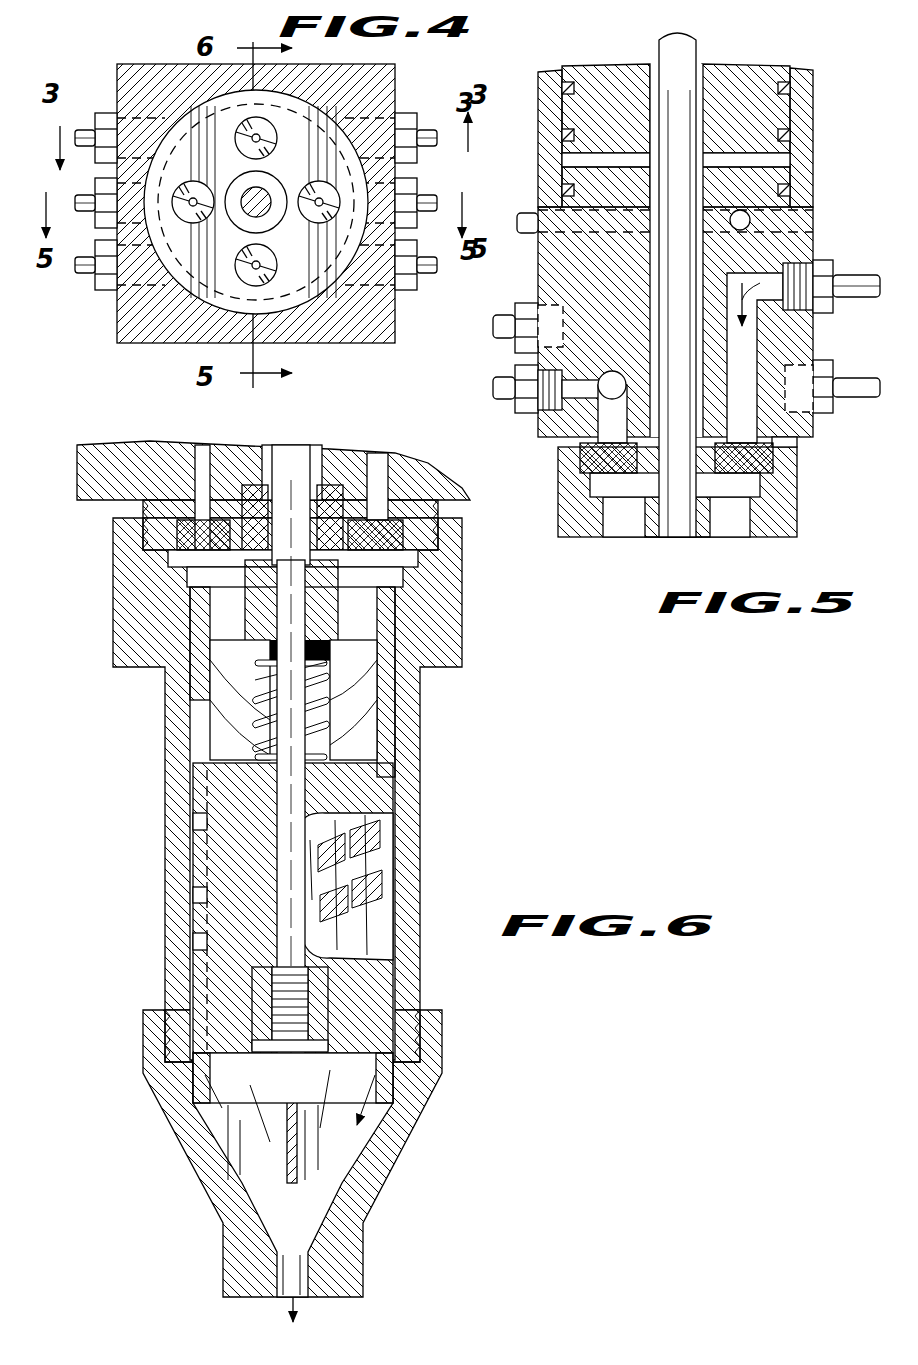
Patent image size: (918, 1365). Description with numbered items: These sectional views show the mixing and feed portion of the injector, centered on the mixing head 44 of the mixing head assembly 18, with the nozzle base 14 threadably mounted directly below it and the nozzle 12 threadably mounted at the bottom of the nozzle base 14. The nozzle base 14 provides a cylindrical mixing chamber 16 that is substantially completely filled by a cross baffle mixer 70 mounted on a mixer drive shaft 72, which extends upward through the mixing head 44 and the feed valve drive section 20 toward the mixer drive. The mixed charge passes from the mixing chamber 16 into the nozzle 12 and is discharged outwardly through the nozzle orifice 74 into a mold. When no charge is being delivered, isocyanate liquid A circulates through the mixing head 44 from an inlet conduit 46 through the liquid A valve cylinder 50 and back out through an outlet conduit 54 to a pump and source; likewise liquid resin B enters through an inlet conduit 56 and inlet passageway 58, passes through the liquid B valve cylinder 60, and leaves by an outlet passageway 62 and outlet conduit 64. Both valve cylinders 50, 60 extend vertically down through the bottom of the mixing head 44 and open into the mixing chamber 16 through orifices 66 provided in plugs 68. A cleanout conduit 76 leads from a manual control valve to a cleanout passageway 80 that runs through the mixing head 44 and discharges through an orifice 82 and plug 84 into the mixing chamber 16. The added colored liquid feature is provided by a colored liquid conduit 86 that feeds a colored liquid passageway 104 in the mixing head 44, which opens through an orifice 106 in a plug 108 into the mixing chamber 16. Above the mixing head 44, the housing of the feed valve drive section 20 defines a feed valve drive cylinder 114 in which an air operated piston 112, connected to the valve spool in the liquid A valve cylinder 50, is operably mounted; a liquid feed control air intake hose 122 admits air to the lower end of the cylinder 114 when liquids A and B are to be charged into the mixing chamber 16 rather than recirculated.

In FIG. 6, the nozzle 12 is at (345, 1232).
In FIG. 5, the nozzle base 14 is at (782, 508).
In FIG. 6, the nozzle base 14 is at (165, 958).
In FIG. 5, the mixing chamber 16 is at (737, 528).
In FIG. 6, the mixing chamber 16 is at (382, 766).
In FIG. 4, the mixing head assembly 18 is at (255, 222).
In FIG. 5, the mixing head assembly 18 is at (842, 349).
In FIG. 6, the mixing head assembly 18 is at (413, 456).
In FIG. 5, the feed valve drive section 20 is at (679, 297).
In FIG. 4, the mixing head 44 is at (126, 330).
In FIG. 6, the mixing head 44 is at (117, 482).
In FIG. 4, the inlet conduit 46 is at (428, 128).
In FIG. 6, the liquid A valve cylinder 50 is at (377, 500).
In FIG. 4, the outlet conduit 54 is at (86, 131).
In FIG. 4, the inlet conduit 56 is at (428, 258).
In FIG. 5, the inlet conduit 56 is at (848, 398).
In FIG. 4, the inlet passageway 58 is at (324, 330).
In FIG. 5, the inlet passageway 58 is at (792, 352).
In FIG. 6, the liquid B valve cylinder 60 is at (205, 458).
In FIG. 4, the outlet passageway 62 is at (195, 302).
In FIG. 5, the outlet passageway 62 is at (617, 320).
In FIG. 4, the outlet conduit 64 is at (86, 280).
In FIG. 5, the outlet conduit 64 is at (507, 314).
In FIG. 4, the orifices 66 is at (272, 130).
In FIG. 6, the orifices 66 is at (196, 515).
In FIG. 4, the plugs 68 is at (238, 136).
In FIG. 6, the plugs 68 is at (188, 535).
In FIG. 5, the cross baffle mixer 70 is at (622, 537).
In FIG. 6, the cross baffle mixer 70 is at (205, 788).
In FIG. 4, the mixer drive shaft 72 is at (256, 202).
In FIG. 5, the mixer drive shaft 72 is at (680, 53).
In FIG. 6, the mixer drive shaft 72 is at (291, 465).
In FIG. 6, the nozzle orifice 74 is at (300, 1270).
In FIG. 4, the cleanout conduit 76 is at (84, 209).
In FIG. 5, the cleanout conduit 76 is at (498, 400).
In FIG. 5, the cleanout passageway 80 is at (627, 362).
In FIG. 4, the orifice 82 is at (191, 198).
In FIG. 5, the orifice 82 is at (580, 456).
In FIG. 4, the plug 84 is at (198, 222).
In FIG. 5, the plug 84 is at (592, 468).
In FIG. 4, the colored liquid conduit 86 is at (430, 194).
In FIG. 5, the colored liquid conduit 86 is at (862, 277).
In FIG. 5, the colored liquid passageway 104 is at (757, 278).
In FIG. 4, the orifice 106 is at (316, 197).
In FIG. 5, the orifice 106 is at (775, 453).
In FIG. 4, the plug 108 is at (322, 190).
In FIG. 5, the plug 108 is at (760, 465).
In FIG. 5, the air operated piston 112 is at (616, 75).
In FIG. 5, the feed valve drive cylinder 114 is at (550, 80).
In FIG. 5, the liquid feed control air intake hose 122 is at (527, 212).